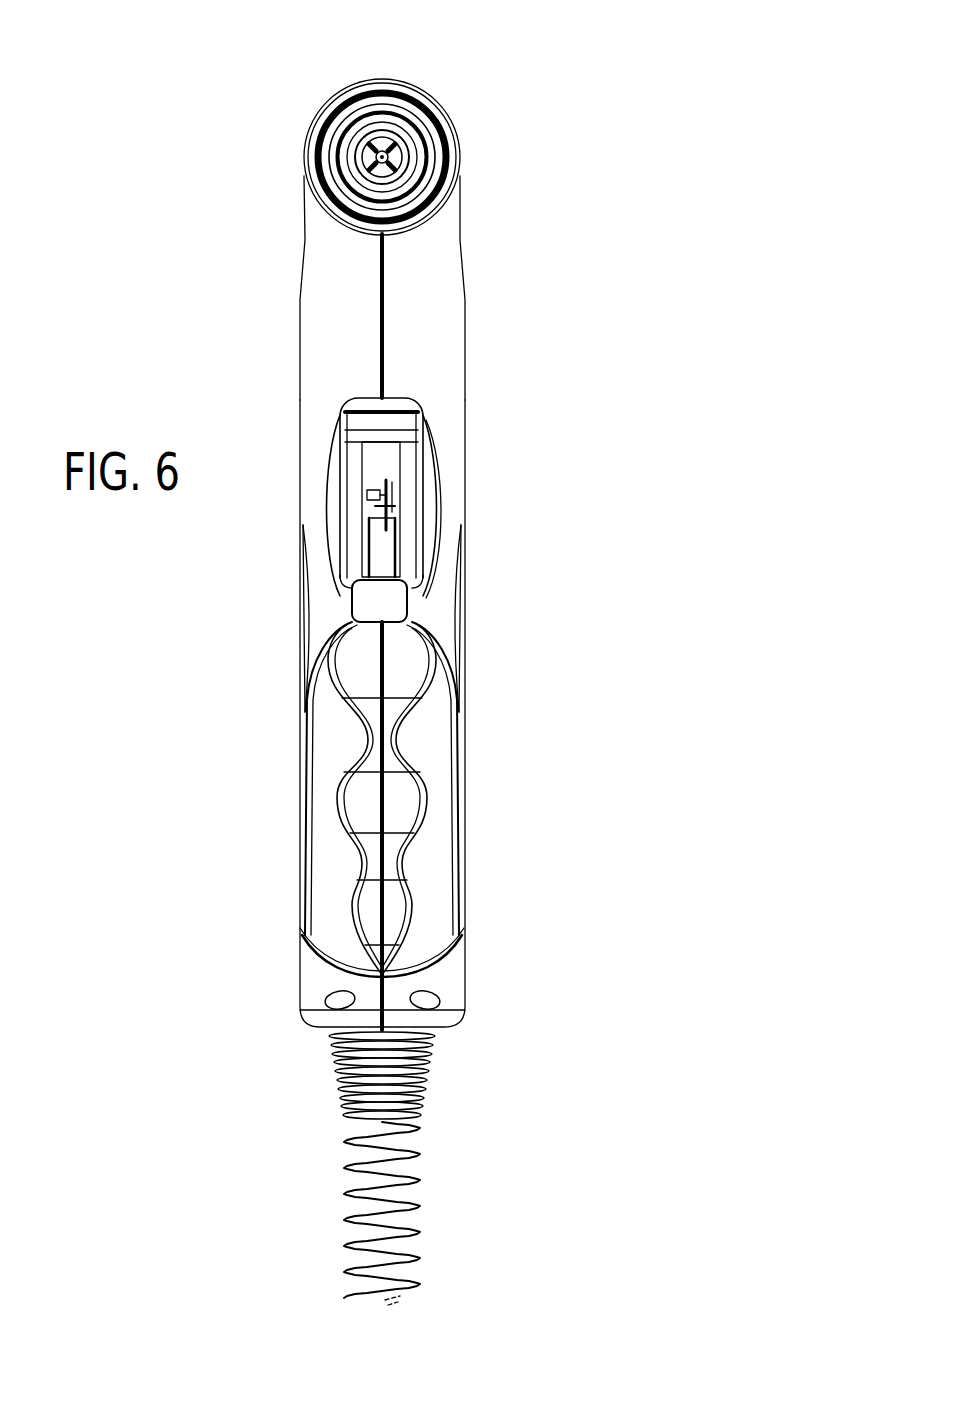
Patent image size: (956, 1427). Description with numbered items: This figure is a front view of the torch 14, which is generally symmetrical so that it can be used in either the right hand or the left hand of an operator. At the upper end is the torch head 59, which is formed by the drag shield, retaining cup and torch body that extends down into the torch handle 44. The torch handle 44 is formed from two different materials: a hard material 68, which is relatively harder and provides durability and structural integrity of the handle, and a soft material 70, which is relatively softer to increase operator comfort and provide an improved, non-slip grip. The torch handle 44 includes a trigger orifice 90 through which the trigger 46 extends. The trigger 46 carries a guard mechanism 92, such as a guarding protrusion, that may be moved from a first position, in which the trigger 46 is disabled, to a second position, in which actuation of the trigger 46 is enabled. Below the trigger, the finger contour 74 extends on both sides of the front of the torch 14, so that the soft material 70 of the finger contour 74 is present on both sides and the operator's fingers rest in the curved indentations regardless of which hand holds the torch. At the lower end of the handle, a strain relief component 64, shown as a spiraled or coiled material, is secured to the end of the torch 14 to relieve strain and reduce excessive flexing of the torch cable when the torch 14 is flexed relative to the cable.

The torch 14 is at (622, 205).
The torch head 59 is at (440, 107).
The hard material 68 is at (460, 230).
The torch handle 44 is at (463, 650).
The trigger 46 is at (380, 555).
The trigger orifice 90 is at (396, 521).
The guard mechanism 92 is at (378, 598).
The soft material 70 is at (443, 893).
The finger contour 74 is at (441, 774).
The strain relief component 64 is at (420, 1187).